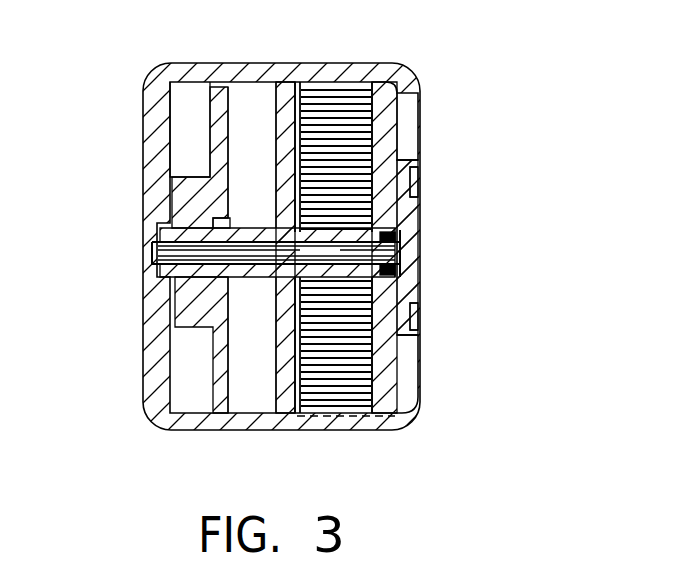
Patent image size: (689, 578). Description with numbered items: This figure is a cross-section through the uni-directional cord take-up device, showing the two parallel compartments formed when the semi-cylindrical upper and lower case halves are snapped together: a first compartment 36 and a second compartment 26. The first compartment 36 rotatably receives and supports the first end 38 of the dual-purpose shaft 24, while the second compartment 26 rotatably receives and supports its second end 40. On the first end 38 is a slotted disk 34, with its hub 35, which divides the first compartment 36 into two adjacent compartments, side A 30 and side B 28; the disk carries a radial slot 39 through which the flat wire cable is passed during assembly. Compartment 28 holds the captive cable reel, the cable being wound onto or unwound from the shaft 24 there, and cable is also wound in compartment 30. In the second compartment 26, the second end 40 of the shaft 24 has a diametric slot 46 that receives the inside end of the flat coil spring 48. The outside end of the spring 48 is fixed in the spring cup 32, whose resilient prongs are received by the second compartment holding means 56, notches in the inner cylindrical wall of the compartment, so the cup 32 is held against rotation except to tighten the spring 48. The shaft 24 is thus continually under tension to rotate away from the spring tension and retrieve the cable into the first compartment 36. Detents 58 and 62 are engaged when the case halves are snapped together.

The dual-purpose shaft 24 is at (400, 188).
The second compartment 26 is at (347, 108).
The compartment (side B) 28 is at (260, 119).
The compartment (side A) 30 is at (204, 119).
The spring cup 32 is at (398, 241).
The slotted disk 34 is at (230, 293).
The hub 35 is at (176, 192).
The first compartment 36 is at (250, 63).
The first end 38 is at (174, 230).
The radial slot 39 is at (234, 228).
The second end 40 is at (398, 272).
The diametric slot 46 is at (398, 256).
The flat coil spring 48 is at (362, 142).
The second compartment holding means 56 is at (370, 416).
The detent 58 is at (415, 190).
The detent 62 is at (414, 312).